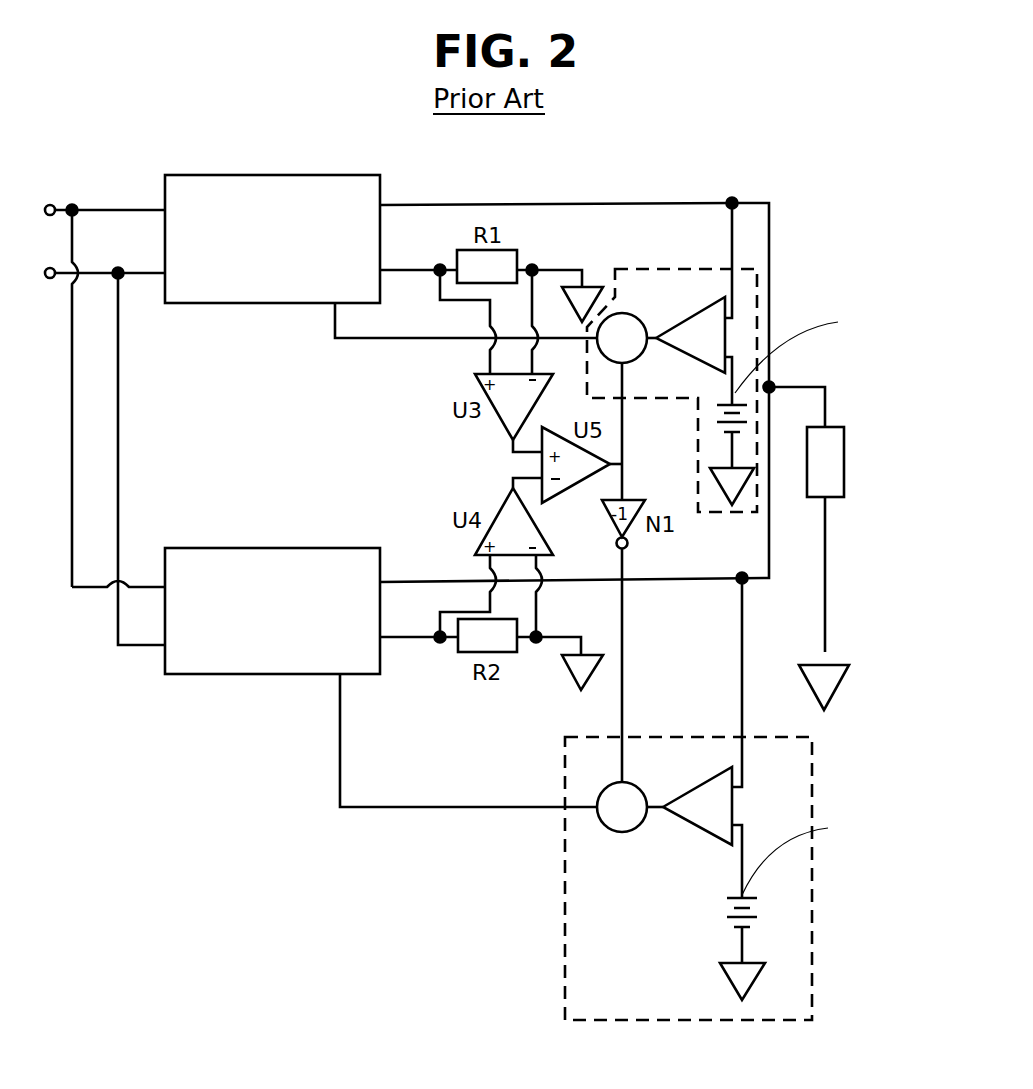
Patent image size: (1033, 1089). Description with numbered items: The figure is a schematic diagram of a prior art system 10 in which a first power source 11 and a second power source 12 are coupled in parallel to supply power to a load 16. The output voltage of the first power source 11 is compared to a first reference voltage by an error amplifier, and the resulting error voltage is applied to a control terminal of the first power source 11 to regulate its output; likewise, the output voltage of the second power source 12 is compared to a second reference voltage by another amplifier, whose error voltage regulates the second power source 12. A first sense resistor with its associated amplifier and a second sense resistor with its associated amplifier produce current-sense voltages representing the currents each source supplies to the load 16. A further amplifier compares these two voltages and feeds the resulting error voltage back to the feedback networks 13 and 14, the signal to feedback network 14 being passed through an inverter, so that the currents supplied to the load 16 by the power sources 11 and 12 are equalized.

The prior art system 10 is at (506, 182).
The first power source 11 is at (218, 303).
The second power source 12 is at (224, 548).
The feedback network 13 is at (668, 269).
The feedback network 14 is at (668, 737).
The load 16 is at (845, 456).